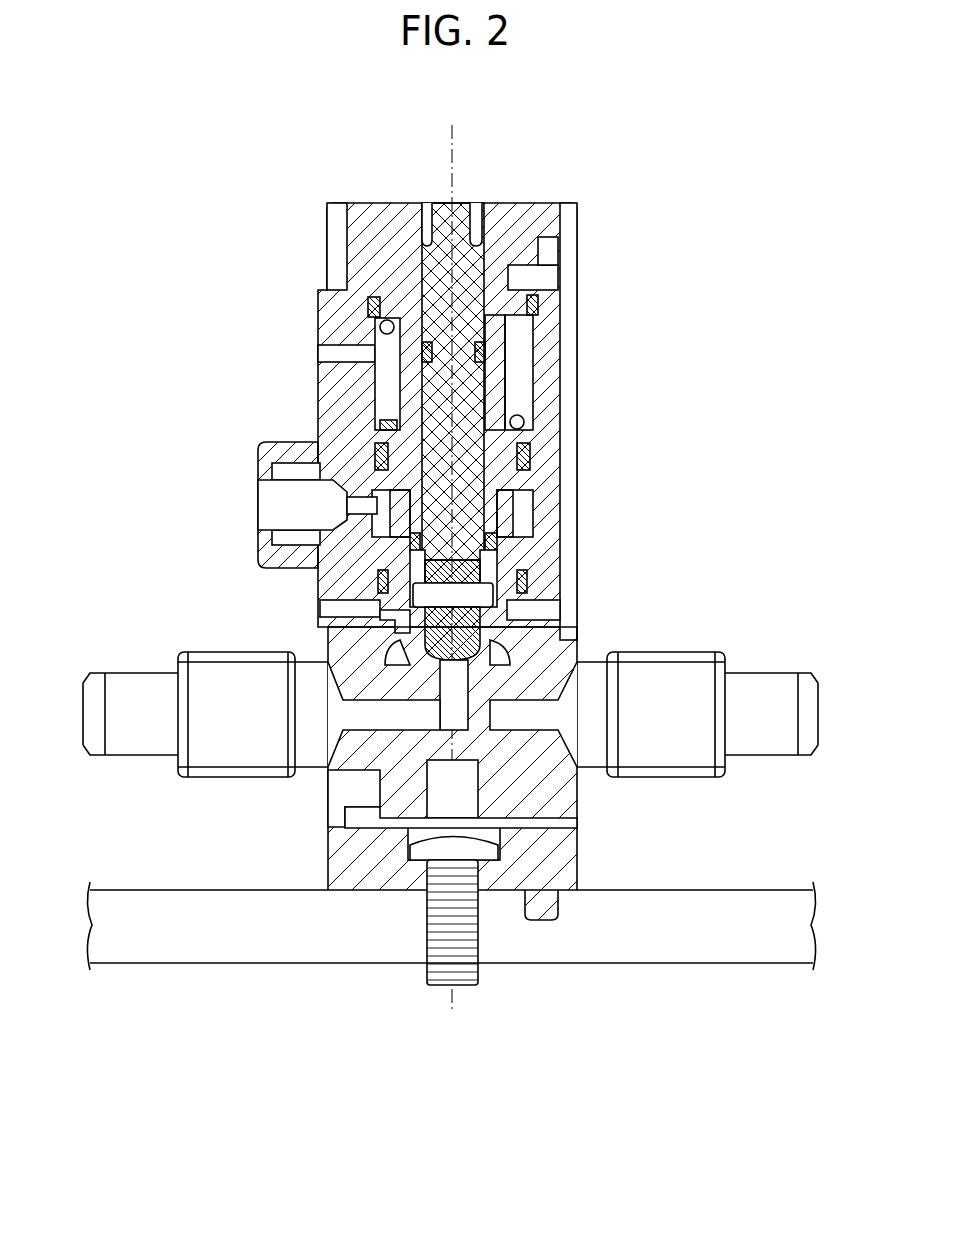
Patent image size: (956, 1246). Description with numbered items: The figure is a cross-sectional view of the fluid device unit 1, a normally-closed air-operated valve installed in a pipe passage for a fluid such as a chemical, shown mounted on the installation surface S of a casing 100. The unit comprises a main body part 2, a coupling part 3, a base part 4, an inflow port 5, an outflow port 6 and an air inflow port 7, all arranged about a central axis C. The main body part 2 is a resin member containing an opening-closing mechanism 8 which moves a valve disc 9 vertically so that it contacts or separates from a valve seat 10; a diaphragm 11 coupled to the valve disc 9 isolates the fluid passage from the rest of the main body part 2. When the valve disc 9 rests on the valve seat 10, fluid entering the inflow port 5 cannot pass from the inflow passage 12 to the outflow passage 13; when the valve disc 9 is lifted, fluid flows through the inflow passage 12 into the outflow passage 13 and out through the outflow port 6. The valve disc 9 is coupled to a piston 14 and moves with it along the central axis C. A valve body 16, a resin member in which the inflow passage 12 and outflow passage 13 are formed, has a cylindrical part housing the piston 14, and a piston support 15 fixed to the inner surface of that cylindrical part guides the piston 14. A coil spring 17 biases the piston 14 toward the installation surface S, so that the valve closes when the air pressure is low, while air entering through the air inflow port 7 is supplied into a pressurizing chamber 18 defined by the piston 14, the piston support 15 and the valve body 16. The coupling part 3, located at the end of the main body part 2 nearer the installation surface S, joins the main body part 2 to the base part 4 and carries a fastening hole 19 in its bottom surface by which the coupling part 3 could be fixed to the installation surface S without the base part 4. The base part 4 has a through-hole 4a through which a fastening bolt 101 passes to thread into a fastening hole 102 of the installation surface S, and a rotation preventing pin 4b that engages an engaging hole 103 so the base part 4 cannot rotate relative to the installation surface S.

The fluid device unit 1 is at (632, 186).
The main body part 2 is at (630, 519).
The coupling part 3 is at (592, 808).
The base part 4 is at (578, 863).
The through-hole 4a is at (417, 887).
The rotation preventing pin 4b is at (558, 905).
The inflow port 5 is at (142, 672).
The outflow port 6 is at (767, 672).
The air inflow port 7 is at (258, 462).
The opening-closing mechanism 8 is at (488, 705).
The valve disc 9 is at (440, 680).
The valve seat 10 is at (435, 648).
The diaphragm 11 is at (385, 642).
The inflow passage 12 is at (370, 722).
The outflow passage 13 is at (540, 703).
The piston 14 is at (533, 440).
The piston support 15 is at (530, 557).
The valve body 16 is at (545, 595).
The coil spring 17 is at (522, 364).
The pressurizing chamber 18 is at (400, 527).
The fastening hole 19 is at (462, 799).
The casing 100 is at (451, 933).
The fastening bolt 101 is at (417, 953).
The fastening hole 102 is at (425, 935).
The engaging hole 103 is at (532, 920).
The central axis C is at (457, 160).
The installation surface S is at (782, 890).